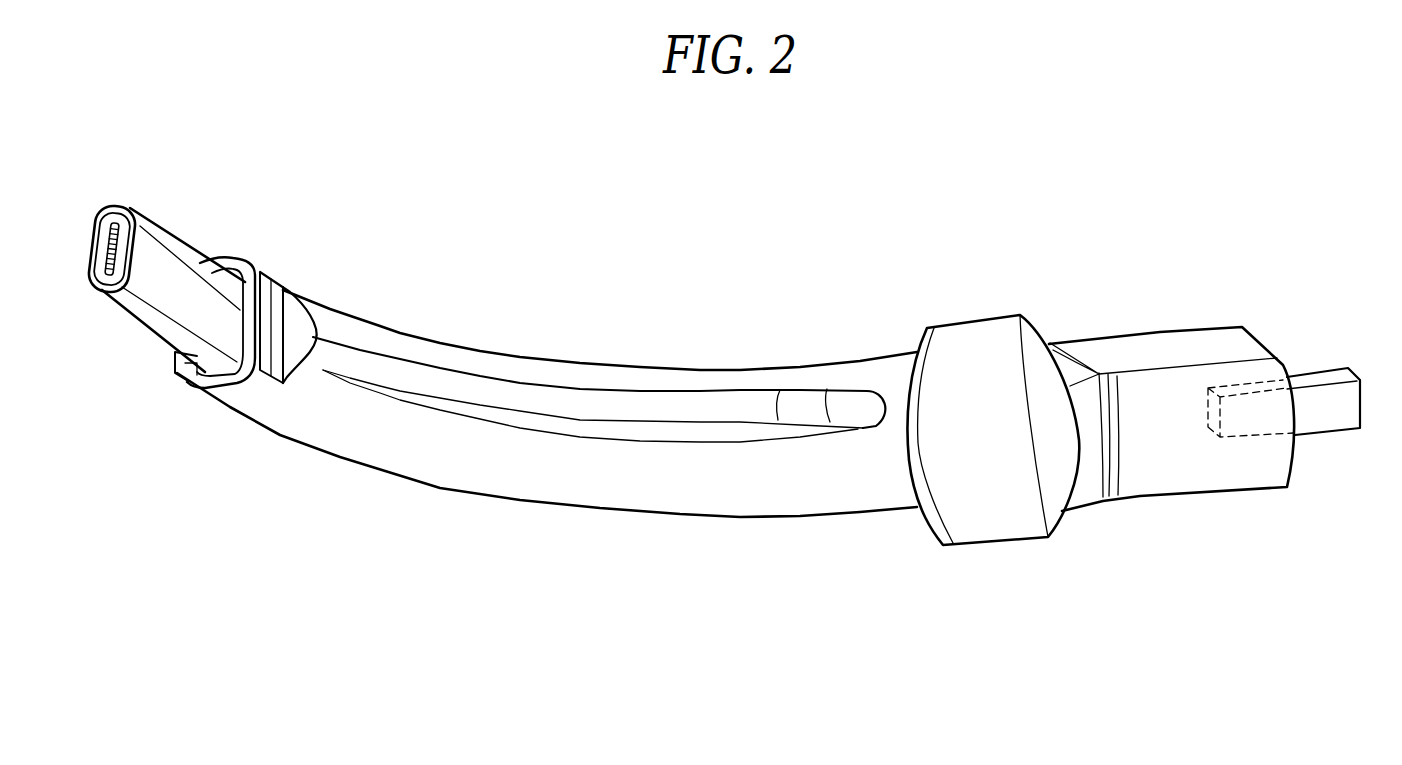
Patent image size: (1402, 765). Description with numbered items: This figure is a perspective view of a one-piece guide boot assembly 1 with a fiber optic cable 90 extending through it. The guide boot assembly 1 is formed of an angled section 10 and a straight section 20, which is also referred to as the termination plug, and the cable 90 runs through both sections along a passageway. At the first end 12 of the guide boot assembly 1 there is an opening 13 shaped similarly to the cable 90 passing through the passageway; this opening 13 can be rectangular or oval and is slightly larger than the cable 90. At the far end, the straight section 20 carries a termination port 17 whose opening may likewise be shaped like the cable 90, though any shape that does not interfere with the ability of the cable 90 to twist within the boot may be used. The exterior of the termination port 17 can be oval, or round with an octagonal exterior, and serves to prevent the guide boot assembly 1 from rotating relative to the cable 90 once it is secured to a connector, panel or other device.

The guide boot assembly 1 is at (662, 285).
The angled section 10 is at (667, 480).
The first end 12 is at (247, 262).
The opening 13 is at (197, 380).
The termination port 17 is at (1287, 367).
The straight section 20 is at (1033, 347).
The fiber optic cable 90 is at (163, 267).